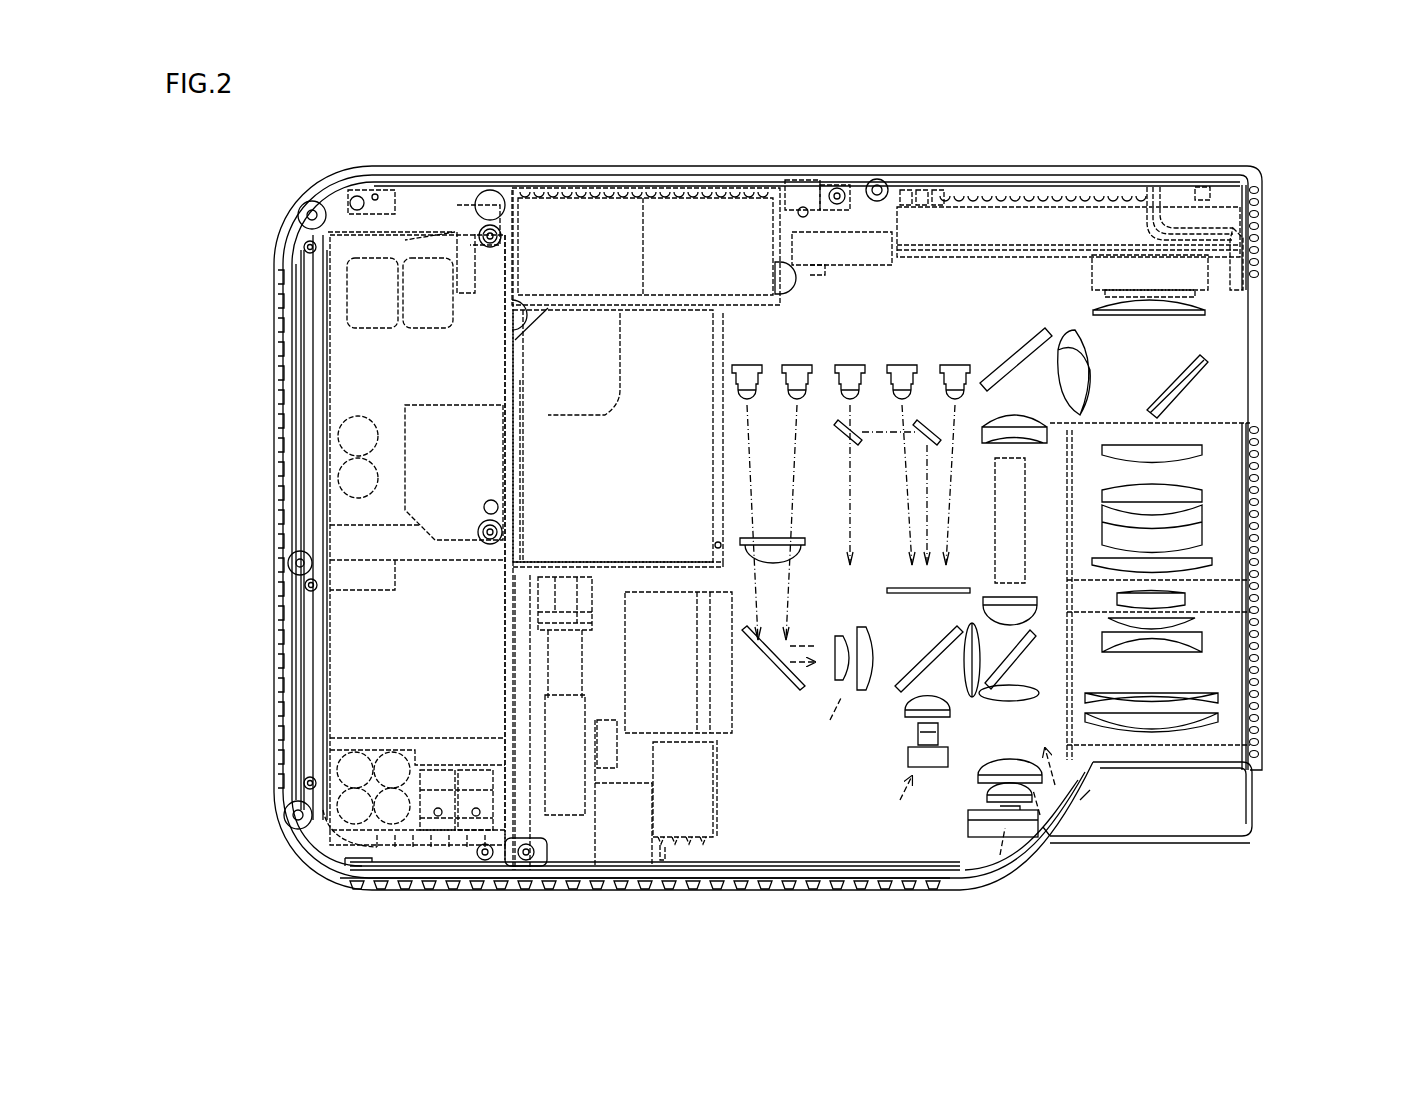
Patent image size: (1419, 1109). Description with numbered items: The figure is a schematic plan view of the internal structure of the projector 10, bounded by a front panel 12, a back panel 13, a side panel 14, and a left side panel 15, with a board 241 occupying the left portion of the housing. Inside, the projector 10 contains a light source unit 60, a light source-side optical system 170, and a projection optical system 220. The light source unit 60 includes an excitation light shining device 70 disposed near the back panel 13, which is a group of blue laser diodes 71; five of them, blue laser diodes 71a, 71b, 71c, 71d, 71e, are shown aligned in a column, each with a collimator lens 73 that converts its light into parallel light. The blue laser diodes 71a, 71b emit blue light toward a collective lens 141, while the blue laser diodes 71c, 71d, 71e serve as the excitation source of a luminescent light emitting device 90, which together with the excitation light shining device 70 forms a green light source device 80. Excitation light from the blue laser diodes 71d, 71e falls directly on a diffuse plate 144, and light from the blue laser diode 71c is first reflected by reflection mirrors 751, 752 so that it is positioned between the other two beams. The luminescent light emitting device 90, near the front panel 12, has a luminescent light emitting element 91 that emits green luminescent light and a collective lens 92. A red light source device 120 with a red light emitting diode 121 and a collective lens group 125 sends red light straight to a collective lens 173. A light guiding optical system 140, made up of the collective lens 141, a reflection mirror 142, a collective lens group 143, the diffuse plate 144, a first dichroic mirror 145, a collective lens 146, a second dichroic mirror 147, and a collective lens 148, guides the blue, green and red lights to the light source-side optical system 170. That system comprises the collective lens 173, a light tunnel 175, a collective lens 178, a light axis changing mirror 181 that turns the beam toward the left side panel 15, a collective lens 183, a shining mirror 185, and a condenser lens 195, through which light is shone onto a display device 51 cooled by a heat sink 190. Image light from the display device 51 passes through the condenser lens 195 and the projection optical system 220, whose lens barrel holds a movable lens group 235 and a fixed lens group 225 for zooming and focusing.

The projector 10 is at (1268, 158).
The front panel 12 is at (430, 890).
The back panel 13 is at (635, 166).
The side case 14 is at (300, 387).
The left side panel 15 is at (1265, 718).
The display device 51 is at (1215, 280).
The light source unit 60 is at (700, 487).
The excitation light shining device 70 is at (812, 298).
The blue laser diodes 71 is at (945, 298).
The blue laser diode 71a is at (747, 362).
The blue laser diode 71b is at (797, 362).
The blue laser diode 71c is at (849, 362).
The blue laser diode 71d is at (903, 362).
The blue laser diode 71e is at (956, 362).
The collimator lenses 73 is at (740, 390).
The green light source device 80 is at (823, 361).
The luminescent light emitting device 90 is at (912, 778).
The luminescent light emitting element 91 is at (927, 768).
The collective lens 92 is at (860, 700).
The red light source device 120 is at (1003, 830).
The red light emitting diode 121 is at (1022, 805).
The collective lens group 125 is at (1028, 812).
The light guiding optical system 140 is at (1082, 803).
The collective lens 141 is at (745, 540).
The reflection mirror 142 is at (770, 698).
The collective lens group 143 is at (838, 700).
The diffuse plate 144 is at (893, 587).
The first dichroic mirror 145 is at (940, 636).
The collective lens 146 is at (973, 700).
The second dichroic mirror 147 is at (1010, 648).
The collective lens 148 is at (1022, 702).
The light source-side optical system 170 is at (1033, 298).
The collective lens 173 is at (1012, 612).
The light tunnel 175 is at (1010, 582).
The collective lens 178 is at (1015, 425).
The light axis changing mirror 181 is at (1010, 298).
The collective lens 183 is at (1085, 352).
The shining mirror 185 is at (1190, 385).
The heat sink 190 is at (1115, 215).
The condenser lens 195 is at (1190, 300).
The projection optical system 220 is at (1205, 532).
The fixed lens group 225 is at (1185, 732).
The movable lens group 235 is at (1205, 478).
The power supply board 241 is at (395, 603).
The reflection mirror 751 is at (850, 446).
The reflection mirror 752 is at (928, 447).